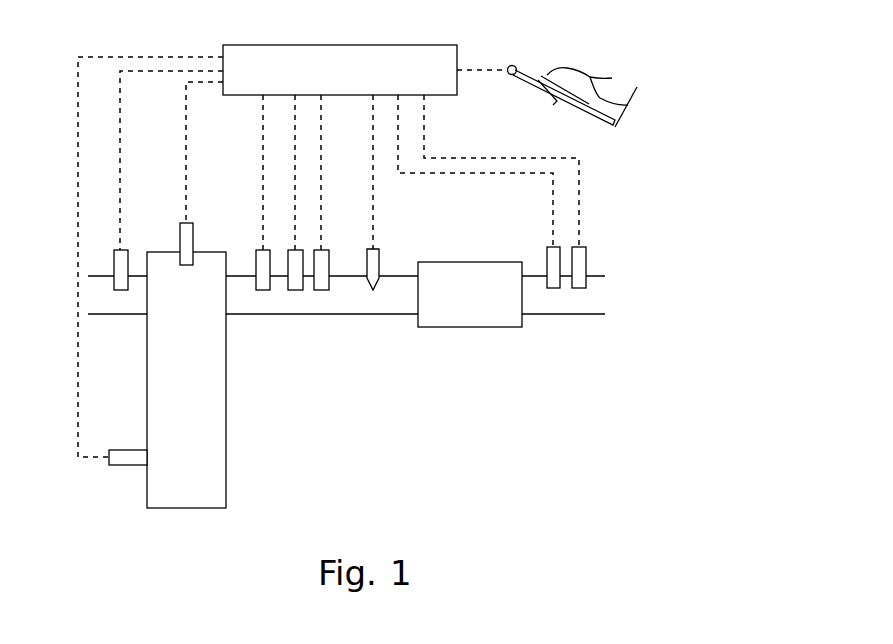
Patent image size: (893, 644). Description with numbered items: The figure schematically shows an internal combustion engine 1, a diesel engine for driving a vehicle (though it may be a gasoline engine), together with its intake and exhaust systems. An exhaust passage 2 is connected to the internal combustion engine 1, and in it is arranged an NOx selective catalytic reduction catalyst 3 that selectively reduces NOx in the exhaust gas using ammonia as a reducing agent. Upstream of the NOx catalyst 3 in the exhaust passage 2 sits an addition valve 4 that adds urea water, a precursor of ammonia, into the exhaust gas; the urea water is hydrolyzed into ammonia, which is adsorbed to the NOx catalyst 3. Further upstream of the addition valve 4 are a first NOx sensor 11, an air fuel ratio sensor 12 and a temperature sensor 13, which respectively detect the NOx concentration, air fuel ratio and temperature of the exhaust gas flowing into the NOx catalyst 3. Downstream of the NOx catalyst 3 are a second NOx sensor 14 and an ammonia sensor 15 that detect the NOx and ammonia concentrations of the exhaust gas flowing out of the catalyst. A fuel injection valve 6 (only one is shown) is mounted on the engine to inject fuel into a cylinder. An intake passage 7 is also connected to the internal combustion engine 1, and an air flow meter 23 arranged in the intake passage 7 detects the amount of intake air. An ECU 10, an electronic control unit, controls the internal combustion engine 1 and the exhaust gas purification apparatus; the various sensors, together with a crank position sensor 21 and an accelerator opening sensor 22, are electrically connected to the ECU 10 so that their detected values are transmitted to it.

The internal combustion engine 1 is at (226, 473).
The exhaust passage 2 is at (316, 314).
The NOx selective catalytic reduction catalyst 3 is at (470, 327).
The addition valve 4 is at (380, 250).
The fuel injection valve 6 is at (178, 240).
The intake passage 7 is at (123, 316).
The ECU 10 is at (458, 57).
The first NOx sensor 11 is at (255, 258).
The air fuel ratio sensor 12 is at (290, 290).
The temperature sensor 13 is at (330, 262).
The second NOx sensor 14 is at (545, 262).
The ammonia sensor 15 is at (590, 262).
The crank position sensor 21 is at (125, 448).
The accelerator opening sensor 22 is at (507, 77).
The air flow meter 23 is at (113, 262).